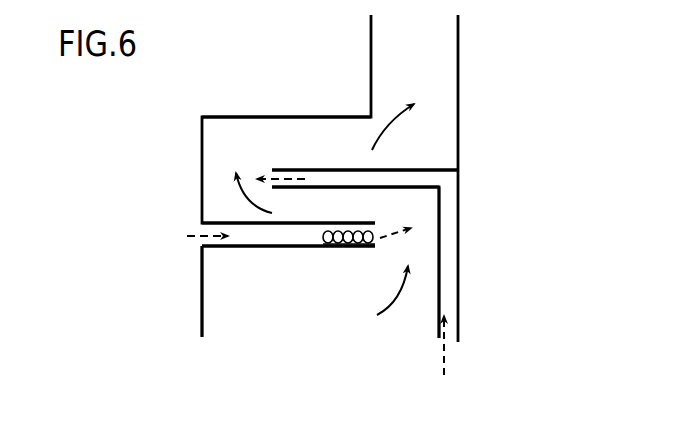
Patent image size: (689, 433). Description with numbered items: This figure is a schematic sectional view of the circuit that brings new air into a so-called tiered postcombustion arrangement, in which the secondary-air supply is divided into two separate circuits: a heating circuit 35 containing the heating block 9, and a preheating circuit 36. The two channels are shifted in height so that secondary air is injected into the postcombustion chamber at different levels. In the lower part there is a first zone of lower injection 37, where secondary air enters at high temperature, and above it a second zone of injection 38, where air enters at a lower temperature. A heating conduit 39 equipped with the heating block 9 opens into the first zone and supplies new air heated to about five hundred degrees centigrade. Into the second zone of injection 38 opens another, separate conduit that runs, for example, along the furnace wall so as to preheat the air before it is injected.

The heating block 9 is at (340, 233).
The heating circuit 35 is at (285, 256).
The preheating circuit 36 is at (396, 160).
The first zone of lower injection 37 is at (352, 271).
The second zone of injection 38 is at (282, 140).
The heating conduit 39 is at (285, 240).